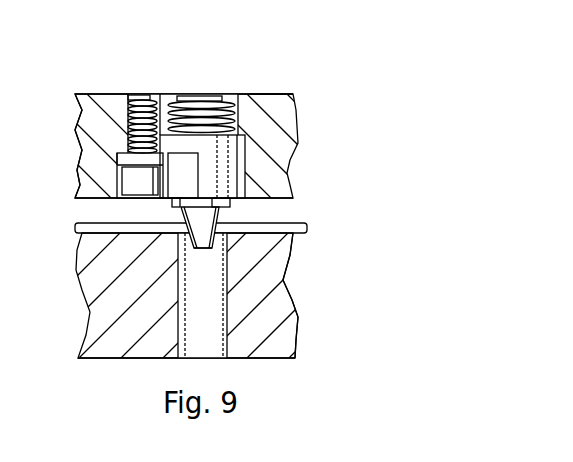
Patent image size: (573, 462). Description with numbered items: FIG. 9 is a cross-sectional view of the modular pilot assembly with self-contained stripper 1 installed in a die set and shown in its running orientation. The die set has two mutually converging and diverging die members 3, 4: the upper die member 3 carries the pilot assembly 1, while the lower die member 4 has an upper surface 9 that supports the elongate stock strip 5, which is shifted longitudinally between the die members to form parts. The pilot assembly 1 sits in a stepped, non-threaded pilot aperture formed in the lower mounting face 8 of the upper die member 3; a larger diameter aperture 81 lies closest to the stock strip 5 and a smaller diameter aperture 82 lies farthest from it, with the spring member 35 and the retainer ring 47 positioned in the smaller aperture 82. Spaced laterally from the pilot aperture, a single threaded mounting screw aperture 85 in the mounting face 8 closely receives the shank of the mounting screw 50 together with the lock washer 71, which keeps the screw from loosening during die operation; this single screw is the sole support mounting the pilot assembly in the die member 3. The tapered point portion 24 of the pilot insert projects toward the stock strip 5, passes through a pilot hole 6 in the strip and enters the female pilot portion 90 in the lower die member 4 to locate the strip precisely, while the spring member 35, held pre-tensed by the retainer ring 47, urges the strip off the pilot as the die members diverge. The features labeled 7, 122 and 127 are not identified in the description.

The modular pilot assembly with self-contained stripper 1 is at (262, 63).
The upper die member 3 is at (296, 95).
The lower die member 4 is at (78, 360).
The stock strip 5 is at (307, 223).
The pilot hole 6 is at (182, 226).
The housing side wall 7 is at (78, 93).
The lower mounting face 8 is at (87, 198).
The upper surface of lower die member 9 is at (80, 255).
The tapered point portion 24 is at (216, 228).
The spring member 35 is at (250, 94).
The retainer ring 47 is at (178, 97).
The mounting screw 50 is at (125, 178).
The lock washer 71 is at (117, 157).
The larger diameter aperture 81 is at (247, 148).
The smaller diameter aperture 82 is at (240, 112).
The threaded mounting screw aperture 85 is at (143, 92).
The female pilot portion 90 is at (215, 347).
The lower body side wall 122 is at (298, 317).
The housing top surface 127 is at (107, 92).